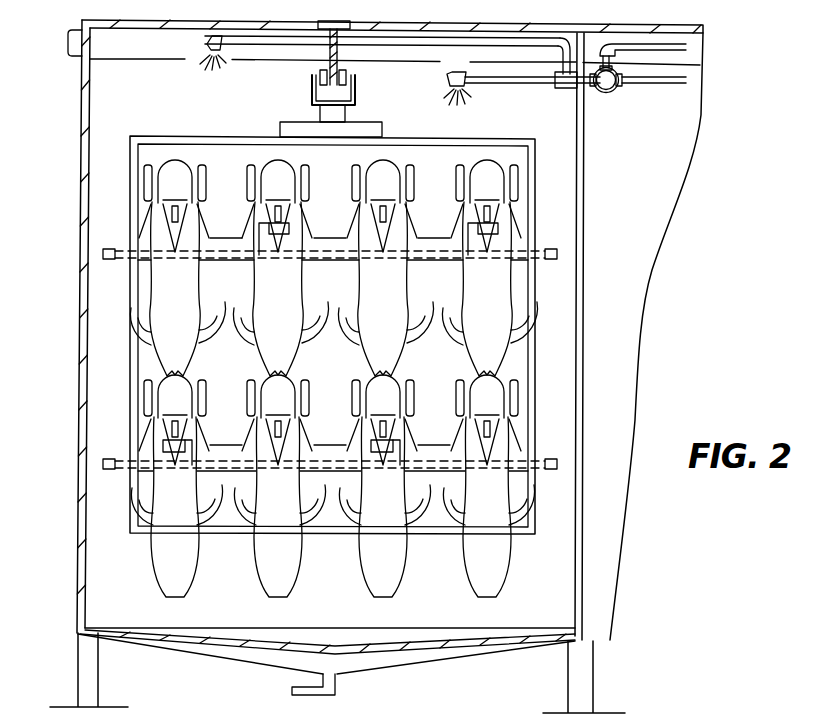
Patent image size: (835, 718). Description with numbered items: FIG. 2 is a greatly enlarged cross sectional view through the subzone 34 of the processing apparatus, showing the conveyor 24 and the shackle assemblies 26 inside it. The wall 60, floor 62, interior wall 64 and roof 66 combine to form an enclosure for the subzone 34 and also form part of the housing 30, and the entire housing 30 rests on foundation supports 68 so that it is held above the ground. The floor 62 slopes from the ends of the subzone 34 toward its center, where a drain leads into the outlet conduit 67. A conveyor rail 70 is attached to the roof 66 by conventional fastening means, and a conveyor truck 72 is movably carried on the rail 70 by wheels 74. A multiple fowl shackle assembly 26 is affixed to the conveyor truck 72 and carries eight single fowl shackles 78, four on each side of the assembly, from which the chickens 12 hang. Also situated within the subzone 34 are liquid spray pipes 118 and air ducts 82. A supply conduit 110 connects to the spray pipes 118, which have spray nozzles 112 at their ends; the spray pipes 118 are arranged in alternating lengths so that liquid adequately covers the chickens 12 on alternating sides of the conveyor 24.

The chickens 12 is at (200, 283).
The conveyor 24 is at (340, 43).
The shackle assembly 26 is at (157, 130).
The housing 30 is at (62, 208).
The subzone 34 is at (104, 385).
The wall 60 is at (79, 326).
The floor 62 is at (178, 650).
The interior wall 64 is at (584, 334).
The roof 66 is at (536, 37).
The outlet conduit 67 is at (336, 684).
The foundation supports 68 is at (77, 678).
The conveyor rail 70 is at (326, 57).
The conveyor truck 72 is at (352, 105).
The wheels 74 is at (318, 70).
The single fowl shackles 78 is at (203, 180).
The air ducts 82 is at (68, 43).
The supply conduit 110 is at (606, 93).
The spray nozzles 112 is at (206, 42).
The spray pipes 118 is at (433, 36).